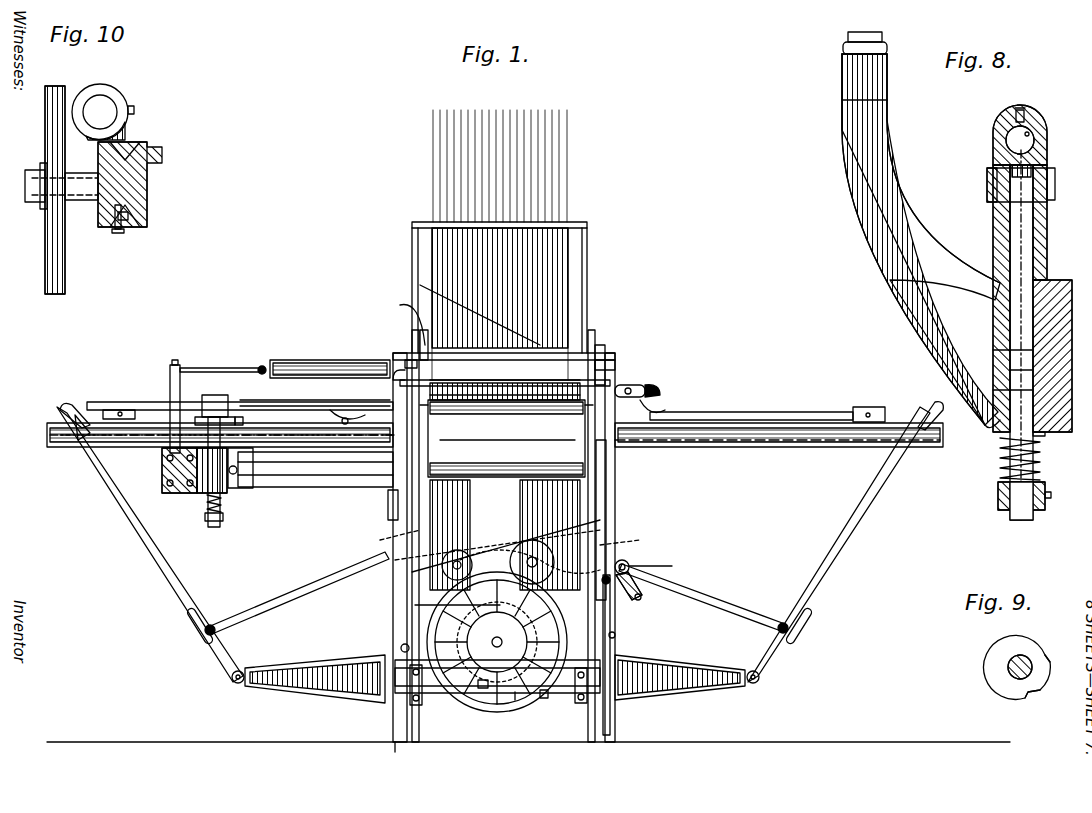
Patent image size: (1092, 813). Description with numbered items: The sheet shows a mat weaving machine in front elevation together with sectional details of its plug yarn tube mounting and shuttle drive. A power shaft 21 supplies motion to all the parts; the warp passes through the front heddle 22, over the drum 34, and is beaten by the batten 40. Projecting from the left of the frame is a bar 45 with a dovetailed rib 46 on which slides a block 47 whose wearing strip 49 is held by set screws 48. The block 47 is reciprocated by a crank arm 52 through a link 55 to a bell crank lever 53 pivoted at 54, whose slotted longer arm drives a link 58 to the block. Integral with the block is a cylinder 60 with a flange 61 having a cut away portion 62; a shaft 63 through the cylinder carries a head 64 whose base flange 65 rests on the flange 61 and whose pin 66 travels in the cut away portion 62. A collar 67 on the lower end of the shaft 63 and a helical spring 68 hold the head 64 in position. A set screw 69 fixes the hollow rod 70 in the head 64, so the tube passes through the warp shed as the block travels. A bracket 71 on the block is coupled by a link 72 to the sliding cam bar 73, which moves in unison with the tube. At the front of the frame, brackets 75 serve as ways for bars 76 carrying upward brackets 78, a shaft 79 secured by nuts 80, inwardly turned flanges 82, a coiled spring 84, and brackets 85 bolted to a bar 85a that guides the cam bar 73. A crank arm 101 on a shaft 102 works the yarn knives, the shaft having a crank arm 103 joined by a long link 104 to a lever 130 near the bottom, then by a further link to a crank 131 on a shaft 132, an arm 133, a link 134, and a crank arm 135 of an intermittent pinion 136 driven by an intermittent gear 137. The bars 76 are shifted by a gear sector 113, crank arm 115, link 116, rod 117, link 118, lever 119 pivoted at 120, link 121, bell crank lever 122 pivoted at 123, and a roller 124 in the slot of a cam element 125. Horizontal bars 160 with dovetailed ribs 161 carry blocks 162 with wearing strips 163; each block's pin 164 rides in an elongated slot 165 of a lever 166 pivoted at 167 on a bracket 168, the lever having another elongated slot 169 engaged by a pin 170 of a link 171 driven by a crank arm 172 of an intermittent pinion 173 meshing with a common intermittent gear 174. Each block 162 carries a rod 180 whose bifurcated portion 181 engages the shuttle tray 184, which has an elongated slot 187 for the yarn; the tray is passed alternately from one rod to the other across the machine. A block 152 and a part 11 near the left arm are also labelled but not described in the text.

In FIG. 1, the arm 11 is at (170, 380).
In FIG. 1, the power shaft 21 is at (560, 650).
In FIG. 1, the front heddle 22 is at (588, 280).
In FIG. 1, the drum 34 is at (506, 430).
In FIG. 1, the batten 40 is at (575, 510).
In FIG. 8, the bar 45 is at (993, 350).
In FIG. 1, the bar 45 is at (345, 487).
In FIG. 8, the dovetailed rib 46 is at (1010, 370).
In FIG. 1, the dovetailed rib 46 is at (300, 462).
In FIG. 8, the block 47 is at (1052, 280).
In FIG. 1, the block 47 is at (200, 490).
In FIG. 8, the set screws 48 is at (1045, 440).
In FIG. 8, the wearing strip 49 is at (993, 390).
In FIG. 1, the crank arm 52 is at (530, 539).
In FIG. 1, the bell crank lever 53 is at (388, 525).
In FIG. 1, the pivot 54 is at (387, 754).
In FIG. 1, the link 55 is at (550, 615).
In FIG. 1, the link 58 is at (320, 478).
In FIG. 8, the cylinder 60 is at (993, 237).
In FIG. 1, the cylinder 60 is at (162, 480).
In FIG. 8, the flange 61 is at (987, 185).
In FIG. 9, the flange 61 is at (1015, 640).
In FIG. 1, the flange 61 is at (200, 417).
In FIG. 9, the cut away portion 62 is at (1032, 695).
In FIG. 8, the shaft 63 is at (1025, 230).
In FIG. 9, the shaft 63 is at (1008, 660).
In FIG. 1, the shaft 63 is at (214, 527).
In FIG. 8, the head 64 is at (1025, 130).
In FIG. 1, the head 64 is at (218, 400).
In FIG. 8, the base flange 65 is at (990, 168).
In FIG. 1, the base flange 65 is at (243, 418).
In FIG. 8, the pin 66 is at (1052, 168).
In FIG. 9, the pin 66 is at (1048, 660).
In FIG. 8, the collar 67 is at (1045, 492).
In FIG. 1, the collar 67 is at (223, 517).
In FIG. 8, the helical spring 68 is at (1040, 466).
In FIG. 1, the helical spring 68 is at (221, 505).
In FIG. 8, the set screw 69 is at (1020, 110).
In FIG. 1, the set screw 69 is at (178, 372).
In FIG. 8, the hollow rod 70 is at (1030, 140).
In FIG. 1, the hollow rod 70 is at (265, 368).
In FIG. 8, the bracket 71 is at (905, 240).
In FIG. 8, the link 72 is at (843, 50).
In FIG. 1, the link 72 is at (240, 368).
In FIG. 1, the sliding cam bar 73 is at (335, 360).
In FIG. 1, the brackets 75 is at (506, 418).
In FIG. 1, the bars 76 is at (315, 389).
In FIG. 1, the bracket 78 is at (315, 392).
In FIG. 1, the shaft 79 is at (478, 385).
In FIG. 1, the nuts 80 is at (398, 368).
In FIG. 1, the inwardly turned flange 82 is at (605, 348).
In FIG. 1, the coiled spring 84 is at (405, 360).
In FIG. 1, the bracket 85 is at (410, 340).
In FIG. 1, the bar 85a is at (549, 350).
In FIG. 1, the crank arm 101 is at (420, 285).
In FIG. 1, the shaft 102 is at (600, 305).
In FIG. 1, the crank arm 103 is at (615, 362).
In FIG. 1, the link 104 is at (612, 510).
In FIG. 1, the gear sector 113 is at (640, 455).
In FIG. 1, the crank arm 115 is at (500, 447).
In FIG. 1, the link 116 is at (245, 470).
In FIG. 1, the rod 117 is at (415, 605).
In FIG. 1, the link 118 is at (395, 705).
In FIG. 1, the lever 119 is at (418, 705).
In FIG. 1, the pivot 120 is at (545, 698).
In FIG. 1, the link 121 is at (680, 664).
In FIG. 1, the bell crank lever 122 is at (578, 700).
In FIG. 1, the pivot 123 is at (480, 688).
In FIG. 1, the roller 124 is at (400, 648).
In FIG. 1, the cam element 125 is at (515, 700).
In FIG. 1, the lever 130 is at (610, 712).
In FIG. 1, the crank 131 is at (664, 564).
In FIG. 1, the shaft 132 is at (630, 563).
In FIG. 1, the arm 133 is at (635, 600).
In FIG. 1, the link 134 is at (615, 635).
In FIG. 1, the crank arm 135 is at (505, 535).
In FIG. 1, the intermittent pinion 136 is at (400, 592).
In FIG. 1, the intermittent gear 137 is at (400, 630).
In FIG. 1, the block 152 is at (125, 410).
In FIG. 10, the horizontal bars 160 is at (140, 183).
In FIG. 1, the horizontal bars 160 is at (150, 445).
In FIG. 10, the dovetailed rib 161 is at (125, 160).
In FIG. 10, the block 162 is at (110, 225).
In FIG. 1, the block 162 is at (870, 407).
In FIG. 10, the wearing strip 163 is at (128, 225).
In FIG. 10, the pin 164 is at (82, 192).
In FIG. 1, the pin 164 is at (47, 433).
In FIG. 1, the elongated slot 165 is at (95, 440).
In FIG. 10, the lever 166 is at (55, 262).
In FIG. 1, the lever 166 is at (135, 565).
In FIG. 1, the pivot 167 is at (232, 680).
In FIG. 1, the bracket 168 is at (300, 695).
In FIG. 1, the elongated slot 169 is at (215, 605).
In FIG. 1, the pin 170 is at (205, 634).
In FIG. 1, the link 171 is at (298, 570).
In FIG. 1, the crank arm 172 is at (502, 540).
In FIG. 1, the intermittent pinion 173 is at (493, 526).
In FIG. 1, the intermittent gear 174 is at (543, 521).
In FIG. 10, the rod 180 is at (105, 110).
In FIG. 1, the rod 180 is at (775, 400).
In FIG. 1, the bifurcated portion 181 is at (655, 408).
In FIG. 1, the shuttle tray 184 is at (658, 385).
In FIG. 1, the elongated slot 187 is at (630, 385).